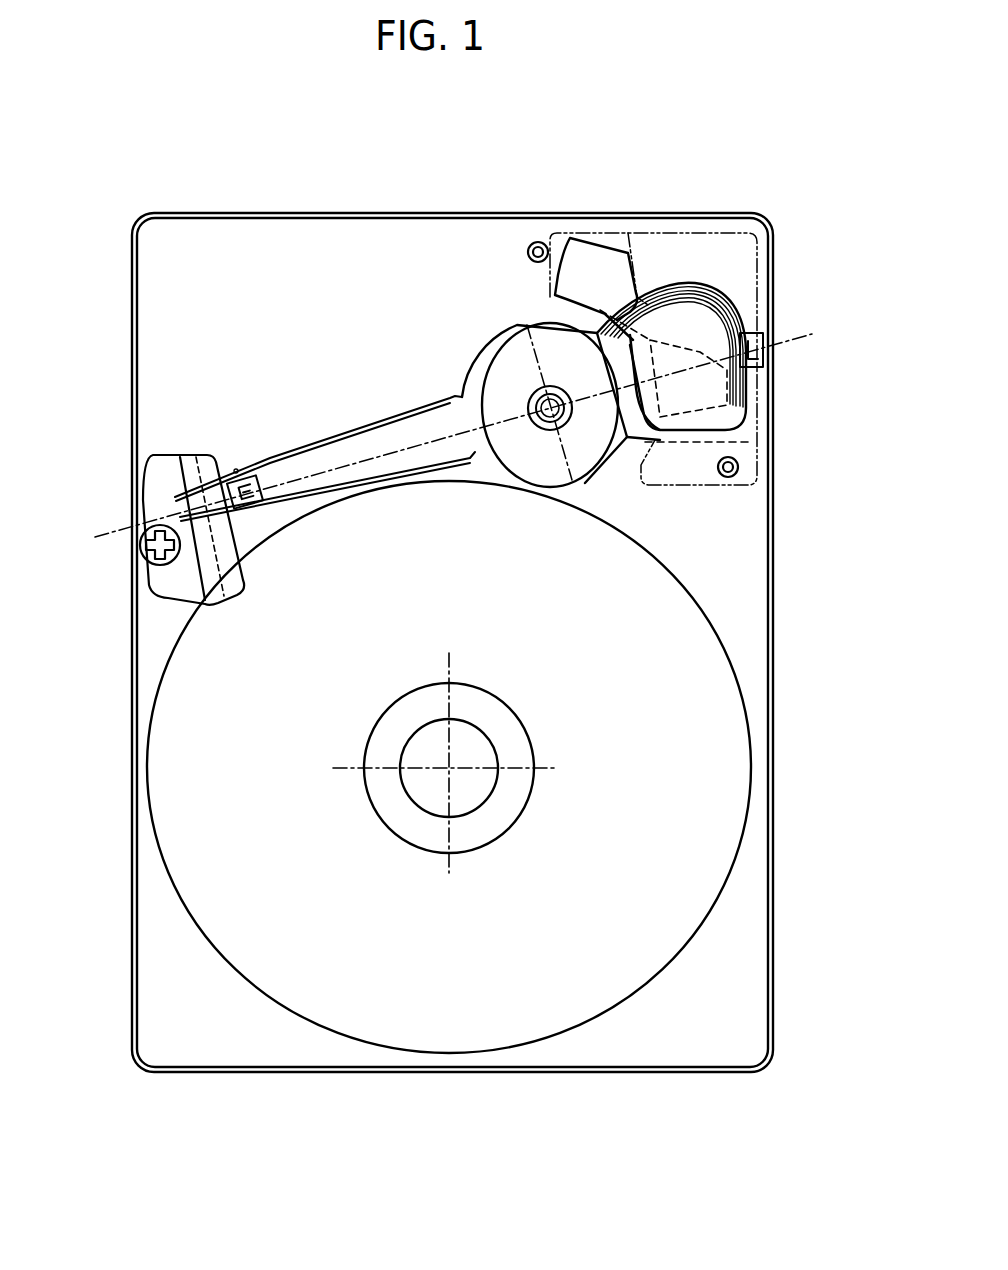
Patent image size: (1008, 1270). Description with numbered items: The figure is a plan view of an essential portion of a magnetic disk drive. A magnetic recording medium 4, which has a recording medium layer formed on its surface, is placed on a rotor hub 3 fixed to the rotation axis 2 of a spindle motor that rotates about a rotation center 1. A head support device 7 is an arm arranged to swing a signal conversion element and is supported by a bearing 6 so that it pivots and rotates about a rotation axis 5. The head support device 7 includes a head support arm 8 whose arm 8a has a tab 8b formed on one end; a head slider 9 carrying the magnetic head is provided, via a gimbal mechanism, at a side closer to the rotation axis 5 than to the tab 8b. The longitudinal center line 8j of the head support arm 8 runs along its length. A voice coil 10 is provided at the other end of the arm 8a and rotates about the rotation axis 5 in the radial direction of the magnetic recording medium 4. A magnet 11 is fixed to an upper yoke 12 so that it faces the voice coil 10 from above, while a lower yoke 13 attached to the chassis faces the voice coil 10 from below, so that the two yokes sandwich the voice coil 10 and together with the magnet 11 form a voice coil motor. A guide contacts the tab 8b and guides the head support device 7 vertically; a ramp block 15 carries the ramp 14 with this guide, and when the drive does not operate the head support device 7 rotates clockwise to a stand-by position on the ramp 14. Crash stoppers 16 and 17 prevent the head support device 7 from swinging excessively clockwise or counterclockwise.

The rotation center 1 is at (449, 768).
The rotation axis 2 is at (433, 794).
The rotor hub 3 is at (425, 825).
The magnetic recording medium 4 is at (228, 810).
The rotation axis 5 is at (530, 388).
The bearing 6 is at (547, 390).
The head support device 7 is at (428, 386).
The head support arm 8 is at (288, 480).
The arm 8a is at (367, 452).
The tab 8b is at (183, 497).
The longitudinal center line 8j is at (697, 360).
The head slider 9 is at (235, 470).
The voice coil 10 is at (690, 318).
The magnet 11 is at (608, 255).
The upper yoke 12 is at (553, 228).
The lower yoke 13 is at (562, 215).
The ramp 14 is at (180, 590).
The ramp block 15 is at (148, 502).
The crash stopper 16 is at (534, 243).
The crash stopper 17 is at (737, 459).